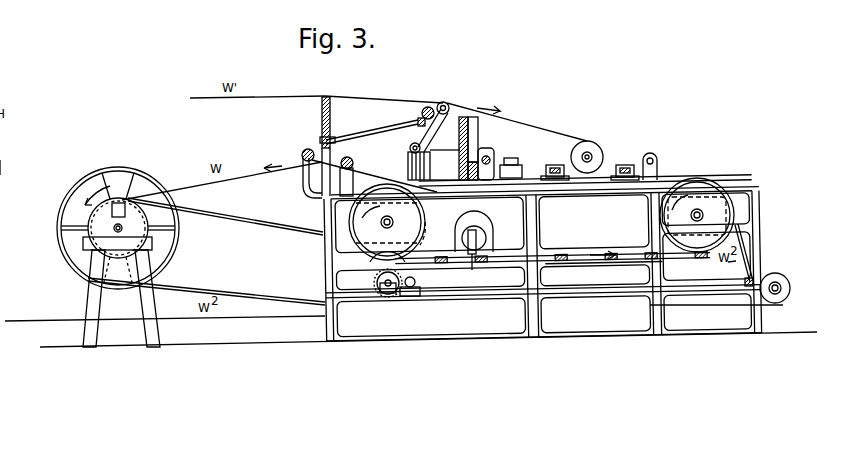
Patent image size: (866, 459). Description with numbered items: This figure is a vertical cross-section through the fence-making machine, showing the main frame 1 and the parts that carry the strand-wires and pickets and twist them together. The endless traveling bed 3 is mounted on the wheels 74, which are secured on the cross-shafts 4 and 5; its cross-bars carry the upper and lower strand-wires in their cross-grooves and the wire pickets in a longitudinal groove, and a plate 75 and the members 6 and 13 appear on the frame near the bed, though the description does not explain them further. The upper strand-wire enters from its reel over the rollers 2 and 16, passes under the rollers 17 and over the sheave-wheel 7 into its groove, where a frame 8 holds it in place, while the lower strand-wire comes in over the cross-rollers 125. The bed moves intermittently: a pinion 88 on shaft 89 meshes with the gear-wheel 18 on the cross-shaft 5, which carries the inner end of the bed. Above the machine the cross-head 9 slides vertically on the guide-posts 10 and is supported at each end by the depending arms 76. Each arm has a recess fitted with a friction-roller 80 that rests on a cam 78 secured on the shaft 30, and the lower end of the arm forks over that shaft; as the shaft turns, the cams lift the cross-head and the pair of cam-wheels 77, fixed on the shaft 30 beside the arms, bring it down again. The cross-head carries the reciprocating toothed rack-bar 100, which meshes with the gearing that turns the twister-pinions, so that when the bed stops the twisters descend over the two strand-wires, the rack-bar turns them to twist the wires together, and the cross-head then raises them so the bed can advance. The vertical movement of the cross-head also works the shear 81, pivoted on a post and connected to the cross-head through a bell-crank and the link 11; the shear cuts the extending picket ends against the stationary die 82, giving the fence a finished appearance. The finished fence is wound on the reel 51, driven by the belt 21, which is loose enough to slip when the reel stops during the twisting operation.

The main frame 1 is at (542, 257).
The roller 2 is at (443, 102).
The endless traveling bed 3 is at (648, 255).
The cross-shaft 4 is at (703, 215).
The cross-shaft 5 is at (387, 222).
The bracket 6 is at (653, 159).
The sheave-wheel 7 is at (594, 146).
The frame 8 is at (548, 164).
The cross-head 9 is at (488, 160).
The guide-post 10 is at (478, 128).
The link 11 is at (375, 133).
The pulley 13 is at (410, 149).
The roller 16 is at (321, 100).
The roller 17 is at (427, 110).
The gear-wheel 18 is at (381, 262).
The belt 21 is at (250, 208).
The shaft 30 is at (470, 272).
The reel 51 is at (136, 208).
The wheel 74 is at (700, 179).
The plate 75 is at (577, 268).
The depending arm 76 is at (468, 205).
The cam-wheel 77 is at (487, 232).
The cam 78 is at (486, 240).
The friction-roller 80 is at (433, 232).
The shear 81 is at (332, 150).
The stationary die 82 is at (322, 172).
The pinion 88 is at (372, 290).
The shaft 89 is at (374, 280).
The rack-bar 100 is at (513, 159).
The cross-roller 125 is at (790, 288).